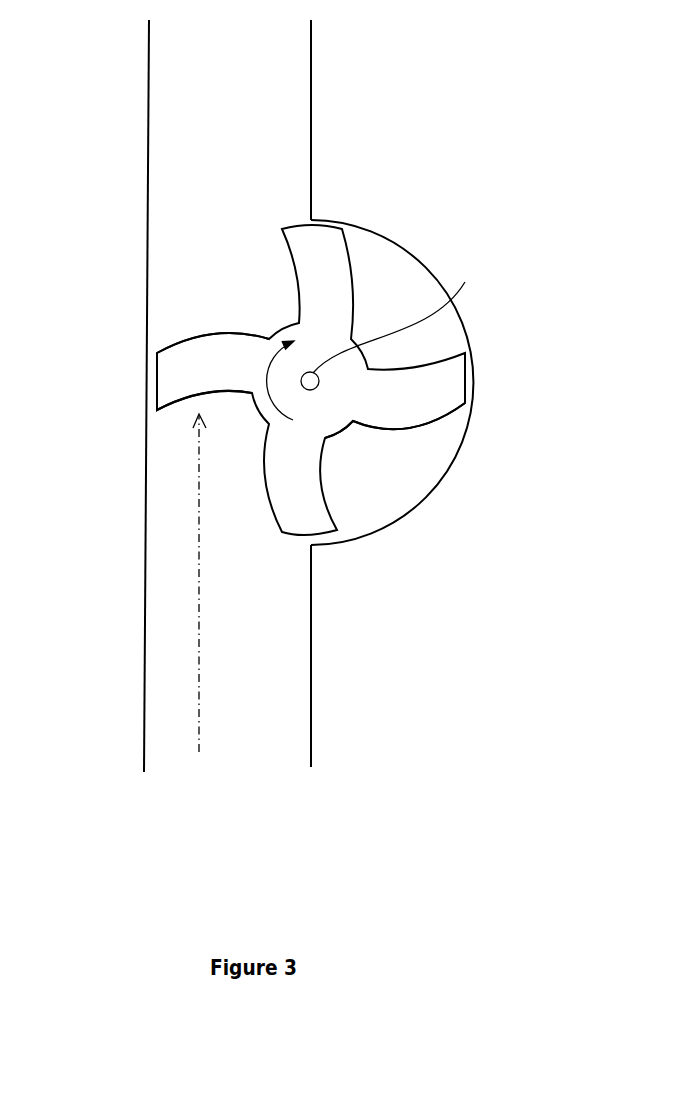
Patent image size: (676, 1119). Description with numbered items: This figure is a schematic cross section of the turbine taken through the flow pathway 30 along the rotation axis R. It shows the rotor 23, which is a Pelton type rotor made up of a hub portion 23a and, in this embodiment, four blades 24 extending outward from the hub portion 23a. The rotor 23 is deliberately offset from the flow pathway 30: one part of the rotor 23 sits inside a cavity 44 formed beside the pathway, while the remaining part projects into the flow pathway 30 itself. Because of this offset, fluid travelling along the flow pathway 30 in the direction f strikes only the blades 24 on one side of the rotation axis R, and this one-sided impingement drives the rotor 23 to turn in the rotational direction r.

The flow pathway 30 is at (240, 127).
The cavity 44 is at (383, 272).
The blades 24 is at (427, 393).
The rotor 23 is at (190, 350).
The hub portion 23a is at (336, 421).
The rotation axis R is at (395, 315).
The direction of rotation r is at (287, 386).
The direction of fluid flow f is at (210, 583).